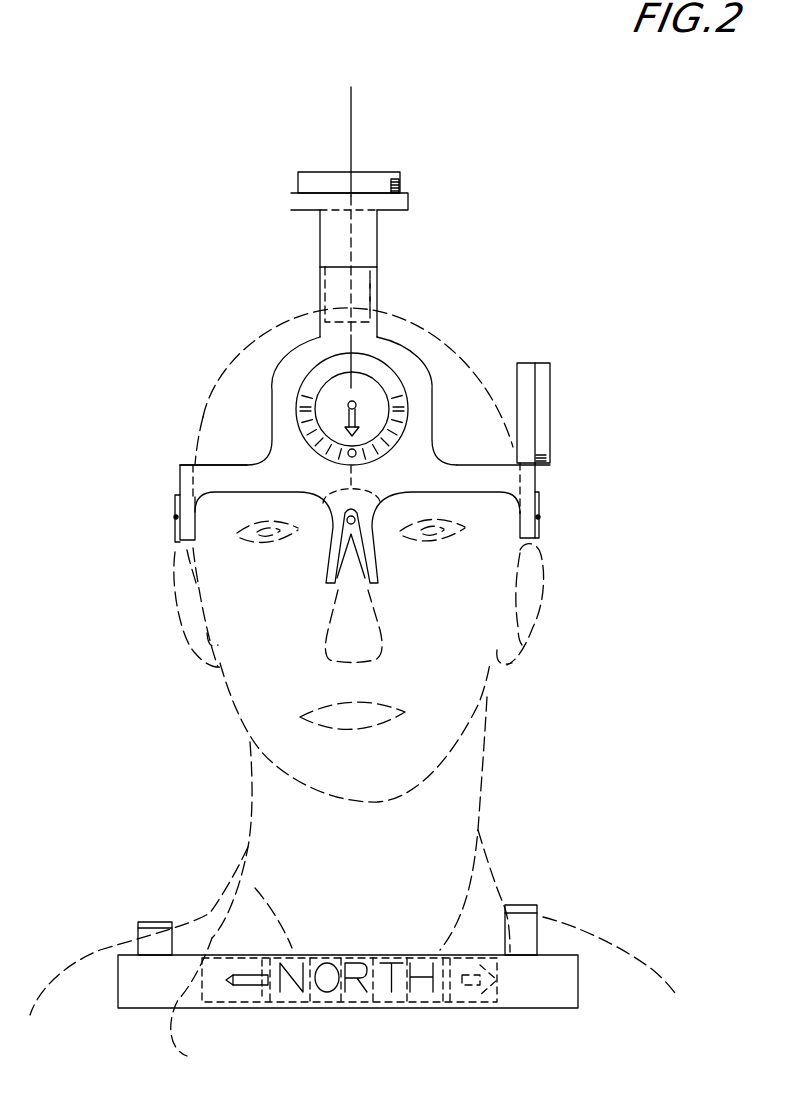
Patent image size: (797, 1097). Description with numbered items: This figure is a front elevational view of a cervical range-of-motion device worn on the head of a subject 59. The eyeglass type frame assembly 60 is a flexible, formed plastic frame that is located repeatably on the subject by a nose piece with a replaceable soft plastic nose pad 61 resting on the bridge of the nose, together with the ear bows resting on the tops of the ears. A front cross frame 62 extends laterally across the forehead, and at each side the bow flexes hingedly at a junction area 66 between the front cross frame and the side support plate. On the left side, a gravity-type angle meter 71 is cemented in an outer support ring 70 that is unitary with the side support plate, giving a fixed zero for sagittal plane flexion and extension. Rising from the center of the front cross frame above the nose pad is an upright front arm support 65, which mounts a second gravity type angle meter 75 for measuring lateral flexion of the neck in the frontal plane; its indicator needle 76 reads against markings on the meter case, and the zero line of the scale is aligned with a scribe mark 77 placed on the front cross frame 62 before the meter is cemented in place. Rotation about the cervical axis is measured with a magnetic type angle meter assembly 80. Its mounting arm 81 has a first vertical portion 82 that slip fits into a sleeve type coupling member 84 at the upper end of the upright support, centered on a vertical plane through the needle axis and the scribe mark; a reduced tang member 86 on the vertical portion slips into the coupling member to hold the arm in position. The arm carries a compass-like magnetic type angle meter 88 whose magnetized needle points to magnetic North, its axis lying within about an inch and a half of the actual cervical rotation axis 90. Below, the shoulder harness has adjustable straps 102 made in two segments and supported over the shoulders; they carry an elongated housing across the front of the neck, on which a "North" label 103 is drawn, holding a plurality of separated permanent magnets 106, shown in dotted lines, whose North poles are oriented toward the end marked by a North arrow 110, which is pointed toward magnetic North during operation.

The subject 59 is at (225, 680).
The eyeglass type frame assembly 60 is at (176, 478).
The nose pad 61 is at (370, 560).
The front cross frame 62 is at (213, 462).
The upright front arm support 65 is at (280, 373).
The junction area 66 is at (527, 473).
The outer support ring 70 is at (516, 365).
The gravity-type angle meter 71 is at (546, 363).
The second gravity type angle meter 75 is at (380, 375).
The indicator needle 76 is at (362, 418).
The scribe mark 77 is at (351, 476).
The magnetic type angle meter assembly 80 is at (325, 242).
The mounting arm 81 is at (322, 218).
The first vertical portion 82 is at (330, 257).
The sleeve type coupling member 84 is at (378, 298).
The tang member 86 is at (382, 282).
The magnetic type angle meter 88 is at (394, 190).
The cervical rotation axis 90 is at (352, 130).
The adjustable straps 102 is at (152, 922).
The base plate 103 is at (340, 992).
The permanent magnets 106 is at (187, 1056).
The North arrow 110 is at (257, 975).